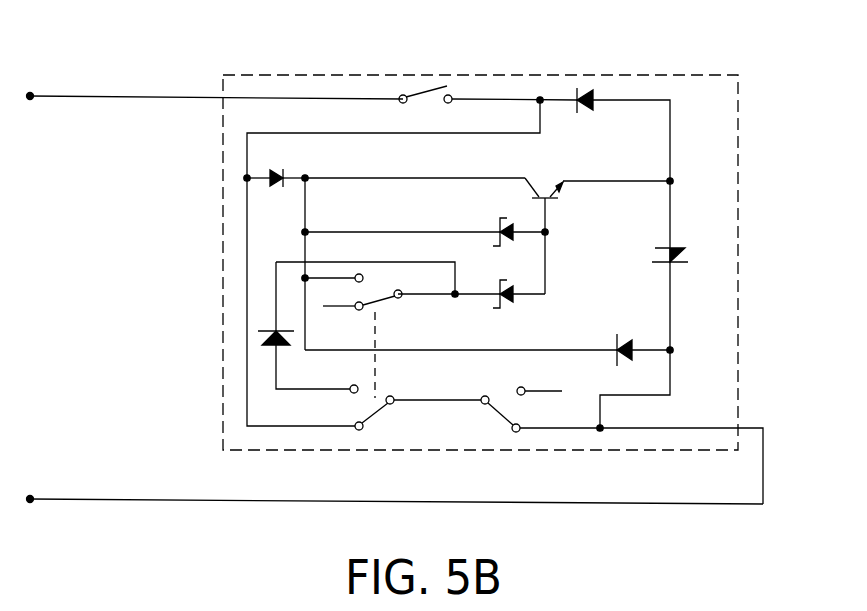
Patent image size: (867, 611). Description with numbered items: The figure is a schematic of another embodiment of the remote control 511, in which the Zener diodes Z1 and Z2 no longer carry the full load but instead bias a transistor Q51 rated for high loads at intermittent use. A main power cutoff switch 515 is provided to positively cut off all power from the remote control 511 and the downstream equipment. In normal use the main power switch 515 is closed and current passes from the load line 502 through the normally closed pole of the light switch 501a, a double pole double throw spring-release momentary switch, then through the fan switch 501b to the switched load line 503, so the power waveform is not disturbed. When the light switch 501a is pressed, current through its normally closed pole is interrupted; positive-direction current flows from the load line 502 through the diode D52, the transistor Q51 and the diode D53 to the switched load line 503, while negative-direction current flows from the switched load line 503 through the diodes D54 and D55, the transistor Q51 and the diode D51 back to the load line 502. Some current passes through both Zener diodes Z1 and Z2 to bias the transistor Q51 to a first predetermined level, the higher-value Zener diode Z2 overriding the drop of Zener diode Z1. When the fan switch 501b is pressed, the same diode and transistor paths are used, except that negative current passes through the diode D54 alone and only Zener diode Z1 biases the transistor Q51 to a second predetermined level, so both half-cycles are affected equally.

The load line 502 is at (136, 96).
The switched load line 503 is at (150, 499).
The main power cutoff switch 515 is at (380, 75).
The remote control 511 is at (530, 258).
The light switch 501a is at (375, 414).
The fan switch 501b is at (494, 412).
The diode D51 is at (614, 117).
The diode D52 is at (276, 200).
The diode D53 is at (690, 275).
The diode D54 is at (487, 330).
The diode D55 is at (294, 358).
The transistor Q51 is at (597, 217).
The Zener diode Z1 is at (425, 213).
The Zener diode Z2 is at (471, 313).